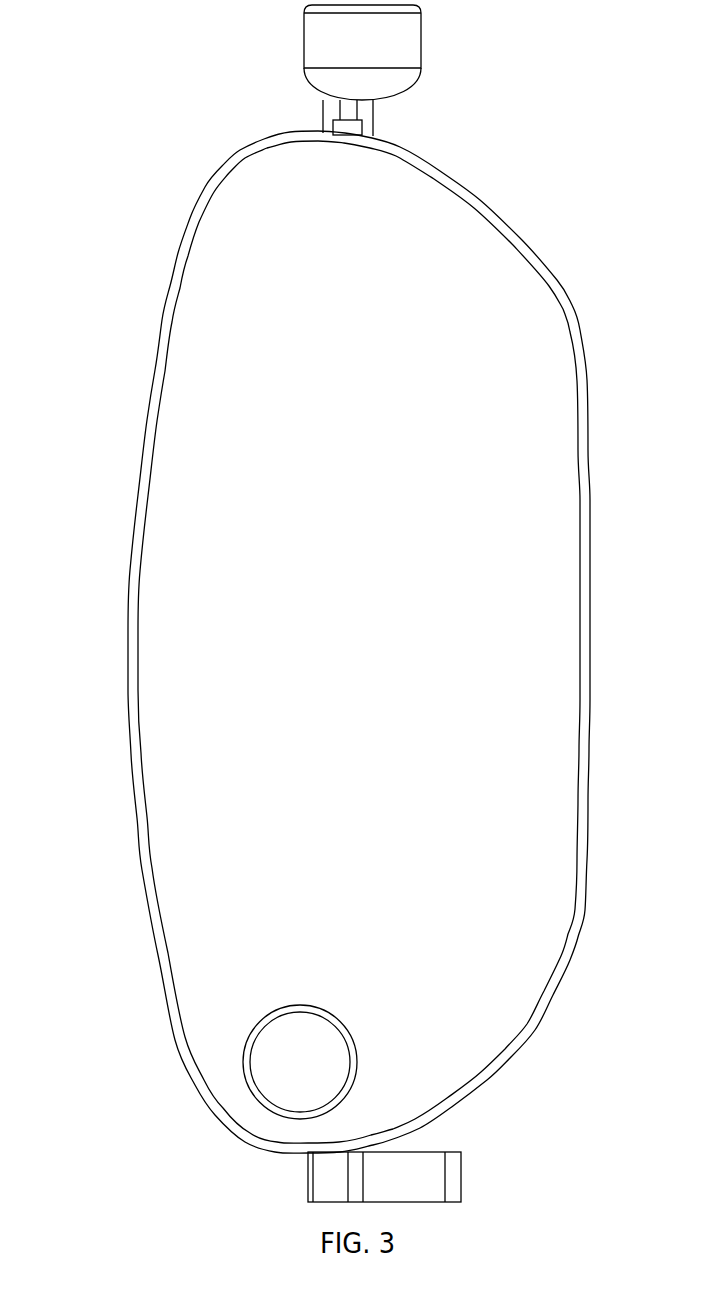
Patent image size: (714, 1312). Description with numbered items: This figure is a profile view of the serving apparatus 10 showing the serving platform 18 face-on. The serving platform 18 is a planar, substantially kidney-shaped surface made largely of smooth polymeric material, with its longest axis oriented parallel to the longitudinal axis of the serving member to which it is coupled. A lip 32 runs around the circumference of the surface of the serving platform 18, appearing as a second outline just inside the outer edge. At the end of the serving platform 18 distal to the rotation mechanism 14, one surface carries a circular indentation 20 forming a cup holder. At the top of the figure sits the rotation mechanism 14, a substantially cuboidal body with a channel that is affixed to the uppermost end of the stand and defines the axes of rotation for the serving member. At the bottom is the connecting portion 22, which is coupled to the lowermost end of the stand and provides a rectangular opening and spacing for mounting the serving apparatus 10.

The serving apparatus 10 is at (145, 188).
The rotation mechanism 14 is at (403, 27).
The serving platform 18 is at (180, 552).
The circular indentation 20 is at (268, 1054).
The connecting portion 22 is at (428, 1178).
The lip 32 is at (147, 818).